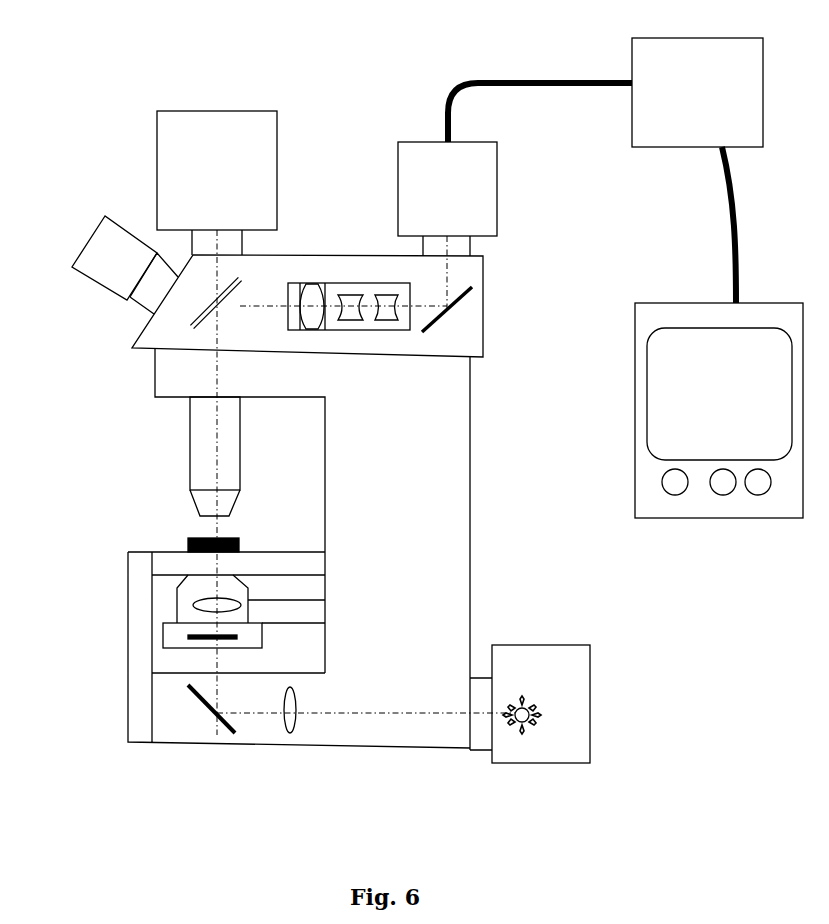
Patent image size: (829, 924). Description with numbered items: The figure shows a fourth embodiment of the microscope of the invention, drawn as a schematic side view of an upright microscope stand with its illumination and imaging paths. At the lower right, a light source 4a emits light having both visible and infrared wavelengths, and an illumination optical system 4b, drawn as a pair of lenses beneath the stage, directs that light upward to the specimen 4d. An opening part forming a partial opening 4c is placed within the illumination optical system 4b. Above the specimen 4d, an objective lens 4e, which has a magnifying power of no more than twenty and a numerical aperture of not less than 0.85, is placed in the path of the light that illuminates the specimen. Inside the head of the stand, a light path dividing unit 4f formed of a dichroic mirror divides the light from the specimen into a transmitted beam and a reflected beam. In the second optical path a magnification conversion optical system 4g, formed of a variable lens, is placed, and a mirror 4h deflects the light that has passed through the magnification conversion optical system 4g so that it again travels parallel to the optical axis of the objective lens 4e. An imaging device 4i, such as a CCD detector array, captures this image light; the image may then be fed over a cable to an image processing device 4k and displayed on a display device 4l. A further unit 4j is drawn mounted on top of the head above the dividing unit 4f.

The light source 4a is at (553, 717).
The illumination optical system 4b is at (283, 713).
The partial opening 4c is at (187, 638).
The specimen 4d is at (188, 540).
The objective lens 4e is at (190, 445).
The light path dividing unit 4f is at (182, 273).
The magnification conversion optical system 4g is at (347, 283).
The mirror 4h is at (450, 313).
The imaging device 4i is at (425, 175).
The detector unit 4j is at (222, 147).
The image processing device 4k is at (683, 147).
The display device 4l is at (660, 418).